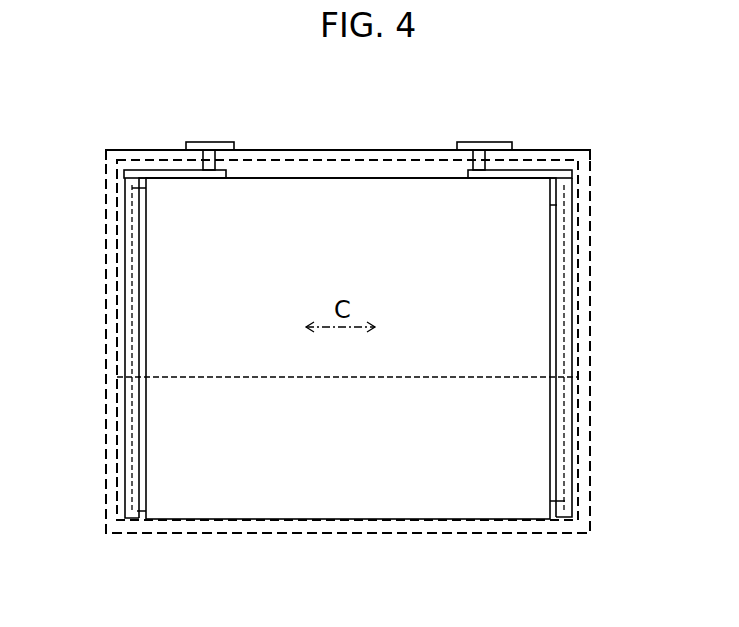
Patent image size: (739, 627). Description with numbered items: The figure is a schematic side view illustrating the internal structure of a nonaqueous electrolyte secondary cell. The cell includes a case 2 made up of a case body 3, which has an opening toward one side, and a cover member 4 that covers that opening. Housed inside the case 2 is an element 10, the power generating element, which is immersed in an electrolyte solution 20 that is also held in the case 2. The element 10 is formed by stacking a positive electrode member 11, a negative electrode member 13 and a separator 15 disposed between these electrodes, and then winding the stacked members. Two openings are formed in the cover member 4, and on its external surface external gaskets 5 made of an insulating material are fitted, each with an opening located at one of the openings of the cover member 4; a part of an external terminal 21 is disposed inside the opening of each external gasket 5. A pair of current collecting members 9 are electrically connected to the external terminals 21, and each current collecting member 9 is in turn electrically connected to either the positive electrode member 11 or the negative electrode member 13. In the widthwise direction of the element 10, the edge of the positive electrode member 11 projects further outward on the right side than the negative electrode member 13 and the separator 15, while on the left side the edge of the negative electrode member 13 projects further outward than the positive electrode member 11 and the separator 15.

The case 2 is at (593, 283).
The case body 3 is at (583, 420).
The cover member 4 is at (562, 150).
The external gasket 5 is at (180, 148).
The current collecting member 9 is at (130, 182).
The element 10 is at (355, 178).
The positive electrode member 11 is at (556, 338).
The negative electrode member 13 is at (146, 349).
The separator 15 is at (313, 184).
The electrolyte solution 20 is at (118, 407).
The external terminal 21 is at (207, 143).